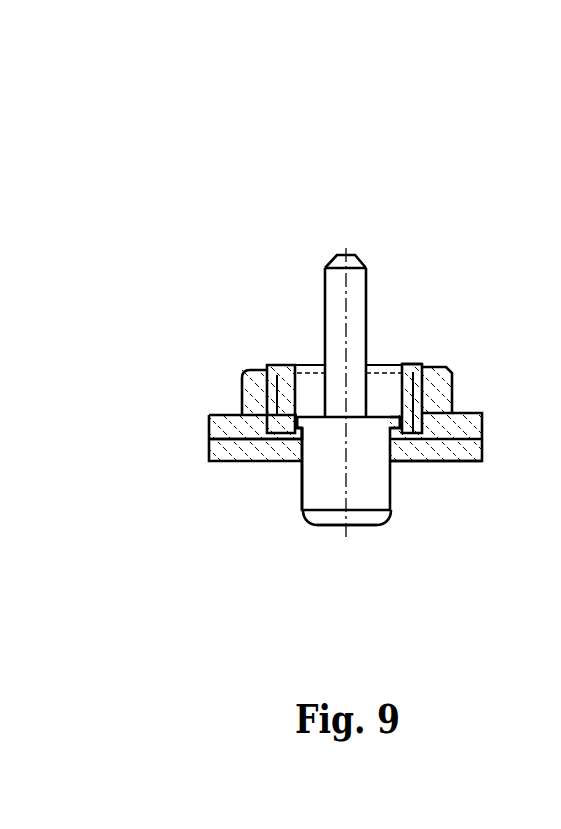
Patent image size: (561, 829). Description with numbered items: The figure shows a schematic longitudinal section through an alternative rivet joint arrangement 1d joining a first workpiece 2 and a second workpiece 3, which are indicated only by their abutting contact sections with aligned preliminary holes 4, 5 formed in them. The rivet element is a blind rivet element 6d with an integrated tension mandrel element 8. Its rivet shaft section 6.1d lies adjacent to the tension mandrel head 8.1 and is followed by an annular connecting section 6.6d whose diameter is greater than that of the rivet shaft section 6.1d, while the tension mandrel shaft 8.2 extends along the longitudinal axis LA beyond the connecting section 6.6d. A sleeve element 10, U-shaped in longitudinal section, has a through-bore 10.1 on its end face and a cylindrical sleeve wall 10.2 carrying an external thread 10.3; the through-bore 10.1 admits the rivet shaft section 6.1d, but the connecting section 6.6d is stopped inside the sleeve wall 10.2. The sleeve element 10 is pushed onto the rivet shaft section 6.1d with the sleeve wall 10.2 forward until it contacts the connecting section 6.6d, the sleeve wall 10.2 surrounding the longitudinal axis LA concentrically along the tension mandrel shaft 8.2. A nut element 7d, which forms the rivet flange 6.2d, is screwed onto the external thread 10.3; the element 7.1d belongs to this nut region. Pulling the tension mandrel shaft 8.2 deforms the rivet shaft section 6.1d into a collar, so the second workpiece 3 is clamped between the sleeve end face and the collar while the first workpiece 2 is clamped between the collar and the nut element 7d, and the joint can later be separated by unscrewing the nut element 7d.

The rivet joint arrangement 1d is at (437, 210).
The first workpiece 2 is at (470, 408).
The second workpiece 3 is at (482, 437).
The first preliminary hole 4 is at (278, 445).
The second preliminary hole 5 is at (302, 436).
The blind rivet element 6d is at (393, 522).
The rivet shaft section 6.1d is at (295, 478).
The rivet flange 6.2d is at (237, 383).
The connecting section 6.6d is at (303, 403).
The nut element 7d is at (452, 368).
The inner part of ring element 7.1d is at (440, 358).
The tension mandrel element 8 is at (308, 294).
The tension mandrel head 8.1 is at (333, 520).
The tension mandrel shaft 8.2 is at (330, 257).
The sleeve element 10 is at (428, 340).
The through-bore 10.1 is at (394, 430).
The cylindrical sleeve wall 10.2 is at (400, 360).
The external thread 10.3 is at (270, 393).
The longitudinal axis LA is at (343, 423).